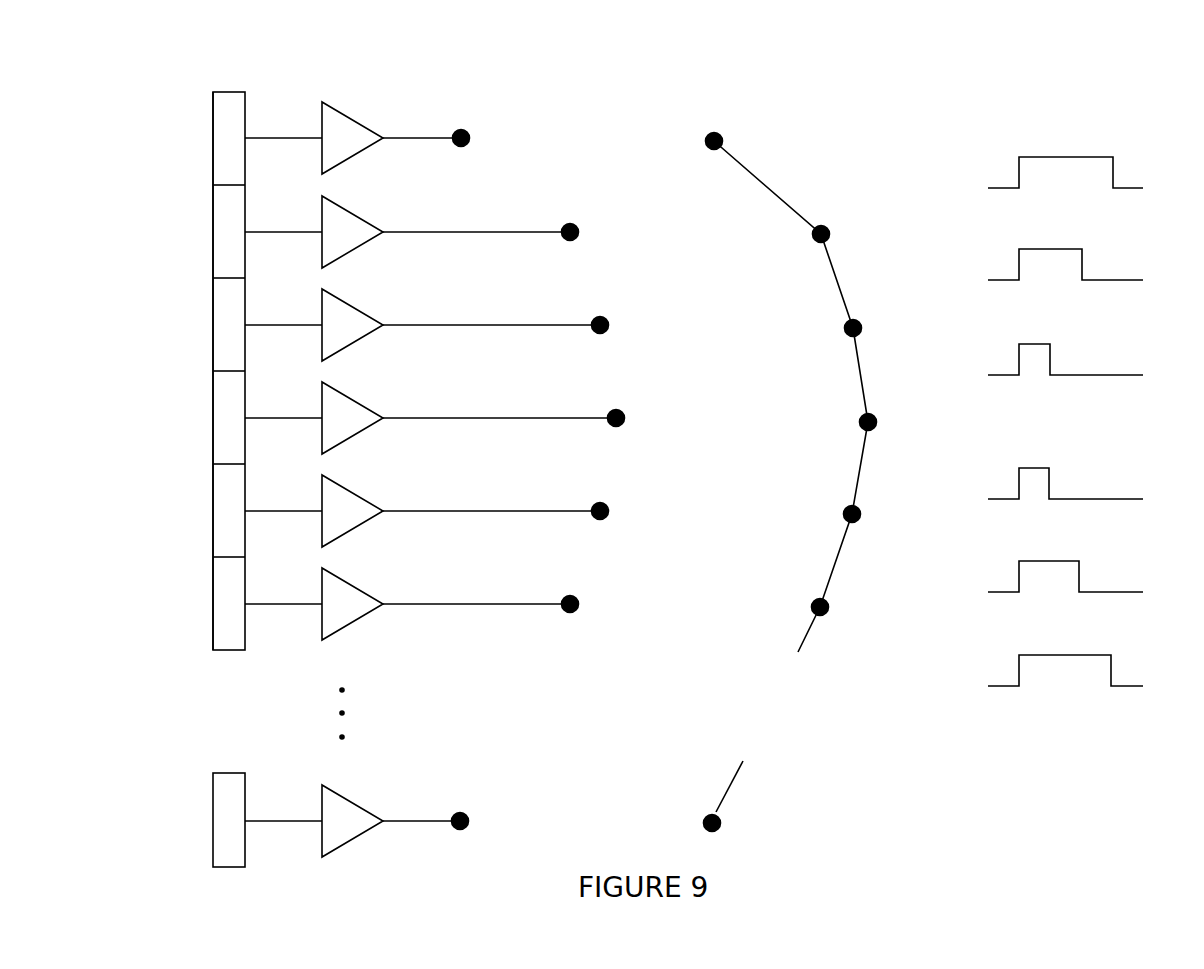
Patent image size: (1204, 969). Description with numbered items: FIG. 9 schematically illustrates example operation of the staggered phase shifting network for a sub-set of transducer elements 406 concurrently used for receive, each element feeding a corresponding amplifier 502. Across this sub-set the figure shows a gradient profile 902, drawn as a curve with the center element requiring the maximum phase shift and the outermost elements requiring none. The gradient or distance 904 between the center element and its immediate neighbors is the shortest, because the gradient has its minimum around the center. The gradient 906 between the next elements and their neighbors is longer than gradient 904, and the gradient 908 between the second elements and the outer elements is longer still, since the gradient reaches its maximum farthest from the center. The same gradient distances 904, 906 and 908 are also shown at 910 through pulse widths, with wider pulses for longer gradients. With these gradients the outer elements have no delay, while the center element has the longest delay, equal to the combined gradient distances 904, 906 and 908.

The transducer elements 406 is at (227, 92).
The amplifiers 502 is at (435, 477).
The gradient profile 902 is at (842, 168).
The gradient 904 is at (1035, 343).
The gradient 906 is at (1050, 250).
The gradient 908 is at (1050, 157).
The pulse widths 910 is at (1102, 106).